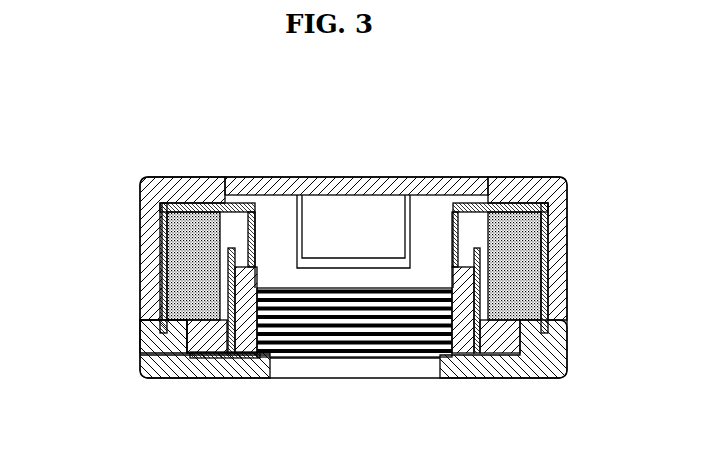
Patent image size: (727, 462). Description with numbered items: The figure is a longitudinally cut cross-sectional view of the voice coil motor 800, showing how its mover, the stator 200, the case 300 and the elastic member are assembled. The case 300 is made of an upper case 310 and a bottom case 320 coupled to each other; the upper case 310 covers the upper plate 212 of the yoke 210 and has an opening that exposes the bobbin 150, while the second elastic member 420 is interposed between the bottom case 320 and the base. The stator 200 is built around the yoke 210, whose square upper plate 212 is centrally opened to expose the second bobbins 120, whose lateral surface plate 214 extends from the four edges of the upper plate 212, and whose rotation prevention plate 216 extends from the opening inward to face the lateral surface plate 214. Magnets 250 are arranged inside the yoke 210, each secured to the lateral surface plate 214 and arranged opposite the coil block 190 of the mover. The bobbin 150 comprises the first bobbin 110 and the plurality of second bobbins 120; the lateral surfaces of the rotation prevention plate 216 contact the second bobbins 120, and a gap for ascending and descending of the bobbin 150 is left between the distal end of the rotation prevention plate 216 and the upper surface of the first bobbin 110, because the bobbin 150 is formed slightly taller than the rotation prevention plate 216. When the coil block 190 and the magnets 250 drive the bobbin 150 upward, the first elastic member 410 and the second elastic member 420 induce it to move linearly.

The voice coil motor 800 is at (543, 162).
The case 300 is at (80, 250).
The upper case 310 is at (147, 252).
The bottom case 320 is at (147, 300).
The magnet 250 is at (146, 326).
The stator 200 is at (187, 249).
The yoke 210 is at (285, 106).
The upper plate 212 is at (202, 203).
The lateral surface plate 214 is at (163, 203).
The rotation prevention plate 216 is at (255, 205).
The first elastic member 410 is at (229, 205).
The second elastic member 420 is at (196, 364).
The coil block 190 is at (222, 372).
The first bobbin 110 is at (245, 372).
The second bobbin 120 is at (267, 370).
The bobbin 150 is at (353, 330).